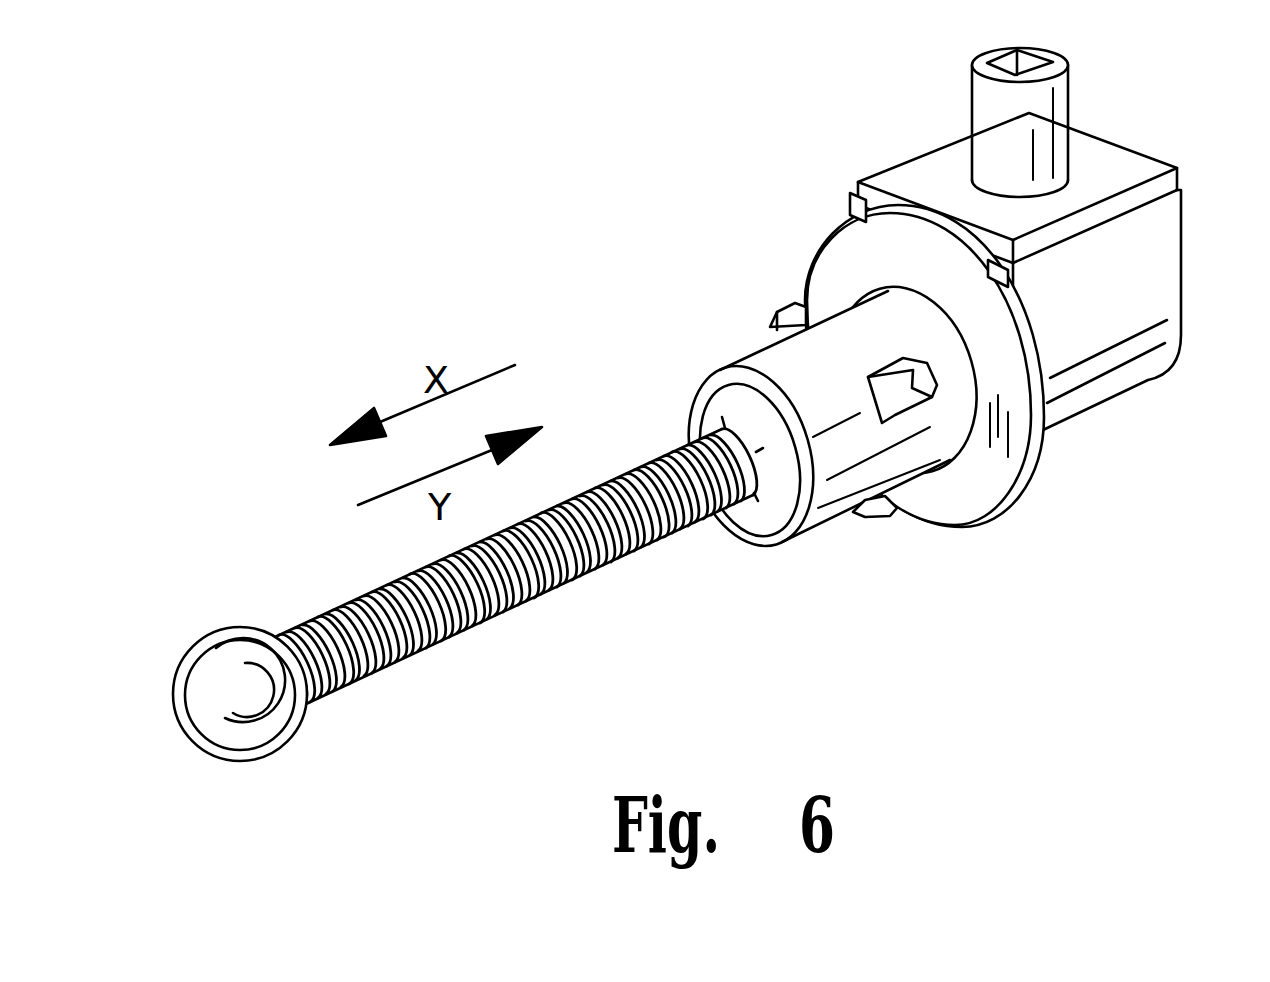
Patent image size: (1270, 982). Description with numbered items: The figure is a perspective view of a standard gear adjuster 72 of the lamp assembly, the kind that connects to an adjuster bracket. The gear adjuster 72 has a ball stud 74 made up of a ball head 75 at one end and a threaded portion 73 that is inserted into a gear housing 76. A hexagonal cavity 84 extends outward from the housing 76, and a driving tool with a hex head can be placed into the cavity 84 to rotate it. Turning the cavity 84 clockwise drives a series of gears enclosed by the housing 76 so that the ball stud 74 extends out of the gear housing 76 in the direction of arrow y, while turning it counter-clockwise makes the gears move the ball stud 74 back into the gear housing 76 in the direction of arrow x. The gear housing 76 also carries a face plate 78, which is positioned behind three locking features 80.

The gear adjuster 72 is at (680, 162).
The threaded portion 73 is at (675, 515).
The ball stud 74 is at (510, 660).
The ball head 75 is at (240, 700).
The gear housing 76 is at (1043, 388).
The face plate 78 is at (977, 500).
The locking features 80 is at (893, 403).
The hexagonal cavity 84 is at (1040, 127).